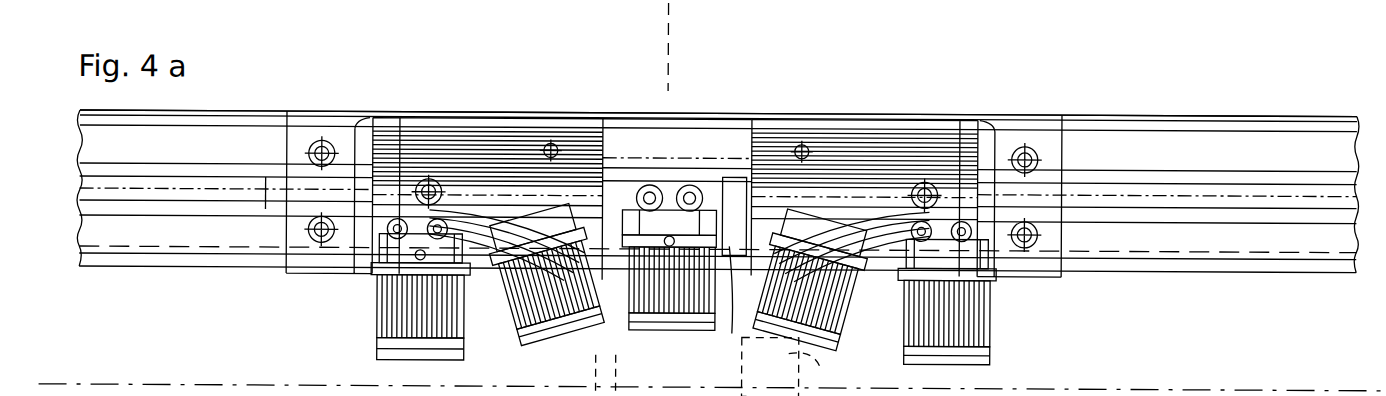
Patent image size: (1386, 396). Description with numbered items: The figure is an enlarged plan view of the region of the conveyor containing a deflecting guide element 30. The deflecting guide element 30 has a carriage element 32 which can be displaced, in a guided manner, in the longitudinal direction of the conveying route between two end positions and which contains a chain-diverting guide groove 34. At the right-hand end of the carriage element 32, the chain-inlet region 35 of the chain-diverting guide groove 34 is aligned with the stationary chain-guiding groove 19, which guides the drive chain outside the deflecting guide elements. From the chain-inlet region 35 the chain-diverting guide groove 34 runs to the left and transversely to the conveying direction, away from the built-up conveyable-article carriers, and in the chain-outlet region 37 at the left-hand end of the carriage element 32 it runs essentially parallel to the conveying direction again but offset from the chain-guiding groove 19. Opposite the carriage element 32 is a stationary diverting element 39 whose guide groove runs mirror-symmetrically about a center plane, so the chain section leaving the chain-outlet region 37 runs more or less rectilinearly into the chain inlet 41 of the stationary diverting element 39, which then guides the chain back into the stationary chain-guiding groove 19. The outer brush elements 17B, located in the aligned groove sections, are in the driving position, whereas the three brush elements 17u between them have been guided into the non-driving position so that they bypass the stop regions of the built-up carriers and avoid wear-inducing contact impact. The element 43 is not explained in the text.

The stationary chain-guiding groove 19 is at (193, 229).
The deflecting guide element 30 is at (754, 72).
The carriage element 32 is at (846, 122).
The chain-diverting guide groove 34 is at (507, 272).
The chain-inlet region 35 is at (978, 222).
The chain-outlet region 37 is at (732, 330).
The stationary diverting element 39 is at (490, 116).
The chain inlet 41 is at (612, 176).
The connecting block 43 is at (370, 226).
The outer brush elements 17B is at (376, 323).
The brush elements in non-driving position 17u is at (540, 343).